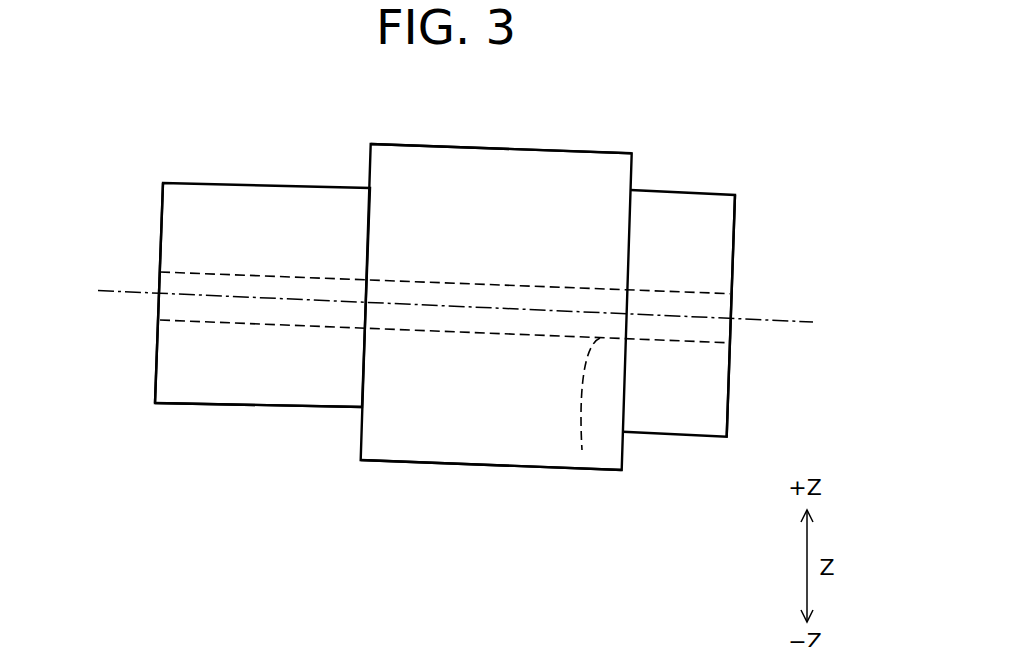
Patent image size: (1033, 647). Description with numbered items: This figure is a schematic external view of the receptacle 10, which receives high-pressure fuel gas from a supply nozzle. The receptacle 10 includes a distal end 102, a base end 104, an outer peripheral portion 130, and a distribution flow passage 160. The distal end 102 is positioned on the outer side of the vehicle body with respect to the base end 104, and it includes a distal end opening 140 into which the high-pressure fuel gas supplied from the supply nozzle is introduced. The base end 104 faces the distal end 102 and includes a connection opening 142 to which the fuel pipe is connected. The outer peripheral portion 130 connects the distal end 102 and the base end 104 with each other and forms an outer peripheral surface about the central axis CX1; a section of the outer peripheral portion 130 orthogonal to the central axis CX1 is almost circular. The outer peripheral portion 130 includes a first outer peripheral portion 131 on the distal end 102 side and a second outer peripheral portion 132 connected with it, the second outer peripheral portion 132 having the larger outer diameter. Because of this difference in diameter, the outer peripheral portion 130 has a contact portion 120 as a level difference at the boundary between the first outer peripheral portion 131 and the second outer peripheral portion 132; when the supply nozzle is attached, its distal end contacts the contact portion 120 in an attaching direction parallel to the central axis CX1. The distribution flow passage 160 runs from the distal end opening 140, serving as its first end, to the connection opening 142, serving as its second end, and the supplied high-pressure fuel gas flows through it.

The receptacle 10 is at (434, 326).
The distal end 102 is at (160, 220).
The base end 104 is at (735, 228).
The contact portion 120 is at (357, 436).
The outer peripheral portion 130 is at (398, 143).
The first outer peripheral portion 131 is at (243, 407).
The second outer peripheral portion 132 is at (512, 467).
The distal end opening 140 is at (158, 305).
The connection opening 142 is at (730, 340).
The distribution flow passage 160 is at (582, 450).
The central axis CX1 is at (429, 301).